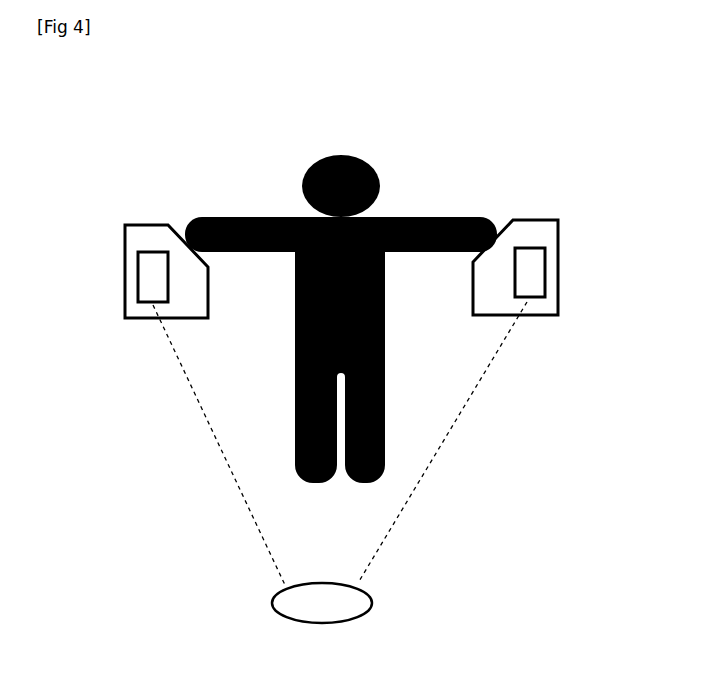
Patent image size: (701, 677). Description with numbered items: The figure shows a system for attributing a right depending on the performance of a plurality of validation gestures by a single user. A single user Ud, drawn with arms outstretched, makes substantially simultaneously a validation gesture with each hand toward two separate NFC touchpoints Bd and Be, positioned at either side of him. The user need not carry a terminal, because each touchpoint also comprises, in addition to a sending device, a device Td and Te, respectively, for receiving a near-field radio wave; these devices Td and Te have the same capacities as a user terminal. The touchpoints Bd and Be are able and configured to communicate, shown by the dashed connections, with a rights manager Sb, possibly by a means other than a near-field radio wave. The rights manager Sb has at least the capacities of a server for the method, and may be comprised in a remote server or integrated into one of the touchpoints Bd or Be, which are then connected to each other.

The user Ud is at (341, 306).
The NFC touchpoint Bd is at (155, 260).
The device for receiving a near-field radio wave Td is at (138, 269).
The NFC touchpoint Be is at (528, 257).
The device for receiving a near-field radio wave Te is at (547, 271).
The rights manager Sb is at (340, 462).